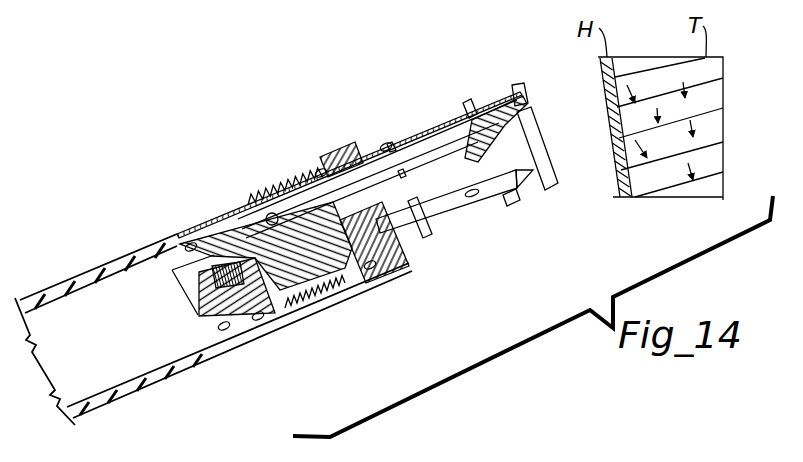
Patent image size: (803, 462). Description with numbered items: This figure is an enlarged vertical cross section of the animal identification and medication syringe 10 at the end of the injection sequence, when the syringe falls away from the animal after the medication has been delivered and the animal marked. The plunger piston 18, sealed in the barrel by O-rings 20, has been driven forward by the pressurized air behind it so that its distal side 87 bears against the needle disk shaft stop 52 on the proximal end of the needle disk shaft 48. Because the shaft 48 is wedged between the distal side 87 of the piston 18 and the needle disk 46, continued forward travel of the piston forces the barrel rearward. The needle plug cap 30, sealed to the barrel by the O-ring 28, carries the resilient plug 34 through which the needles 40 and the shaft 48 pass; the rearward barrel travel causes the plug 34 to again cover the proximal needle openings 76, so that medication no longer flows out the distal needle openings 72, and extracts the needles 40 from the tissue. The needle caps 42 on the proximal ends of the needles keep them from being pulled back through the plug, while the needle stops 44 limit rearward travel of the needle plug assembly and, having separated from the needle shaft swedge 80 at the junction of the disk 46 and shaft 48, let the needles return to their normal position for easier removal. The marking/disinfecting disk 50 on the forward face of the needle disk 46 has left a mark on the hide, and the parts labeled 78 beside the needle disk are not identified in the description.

The cable anchoring assembly 10 is at (150, 192).
The plunger piston 18 is at (214, 333).
The O-rings 20 is at (178, 235).
The O-ring 28 is at (320, 168).
The needle plug cap 30 is at (408, 268).
The resilient plug 34 is at (314, 304).
The needles 40 is at (480, 197).
The needle caps 42 is at (232, 230).
The needle stops 44 is at (388, 147).
The needle disk 46 is at (510, 202).
The needle disk shaft 48 is at (412, 212).
The marking/disinfecting disk 50 is at (517, 83).
The needle disk shaft stop 52 is at (246, 232).
The distal needle opening 72 is at (447, 123).
The proximal needle opening 76 is at (267, 214).
The flange 78 is at (524, 98).
The needle shaft swedge 80 is at (477, 163).
The distal side of piston 87 is at (172, 270).